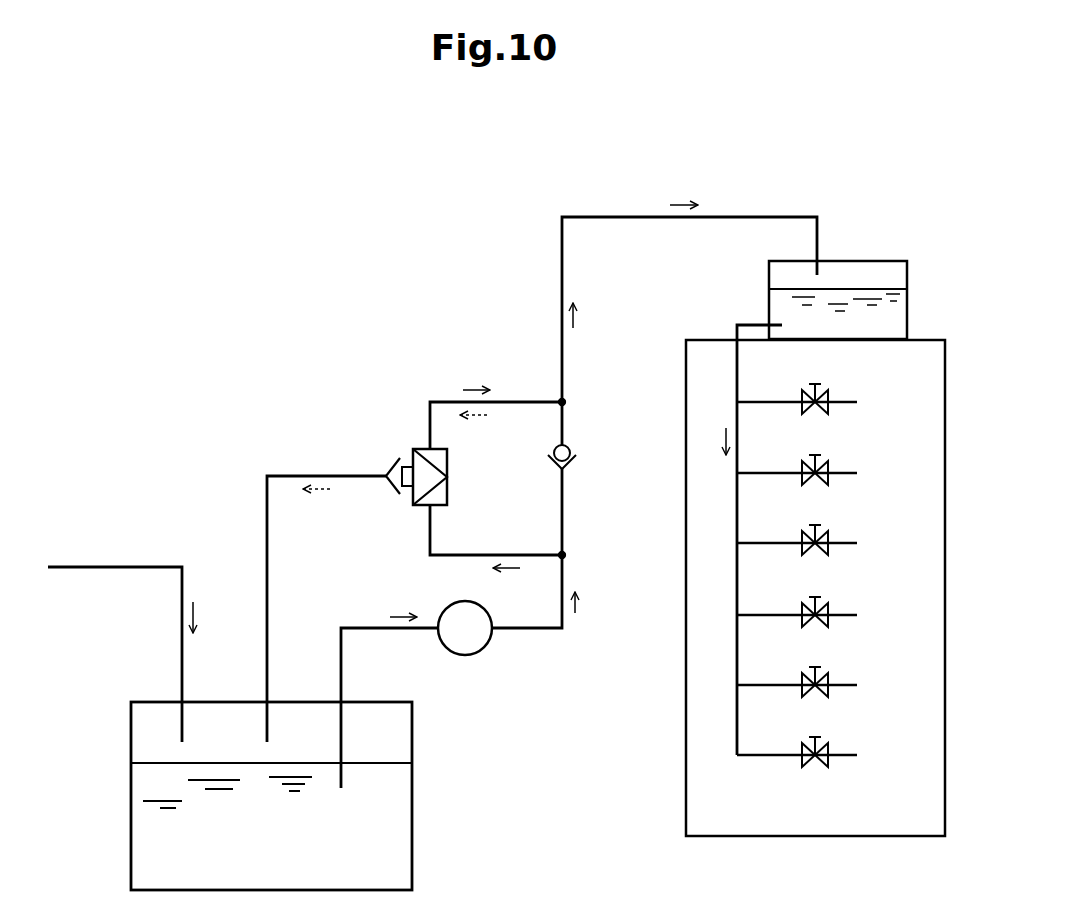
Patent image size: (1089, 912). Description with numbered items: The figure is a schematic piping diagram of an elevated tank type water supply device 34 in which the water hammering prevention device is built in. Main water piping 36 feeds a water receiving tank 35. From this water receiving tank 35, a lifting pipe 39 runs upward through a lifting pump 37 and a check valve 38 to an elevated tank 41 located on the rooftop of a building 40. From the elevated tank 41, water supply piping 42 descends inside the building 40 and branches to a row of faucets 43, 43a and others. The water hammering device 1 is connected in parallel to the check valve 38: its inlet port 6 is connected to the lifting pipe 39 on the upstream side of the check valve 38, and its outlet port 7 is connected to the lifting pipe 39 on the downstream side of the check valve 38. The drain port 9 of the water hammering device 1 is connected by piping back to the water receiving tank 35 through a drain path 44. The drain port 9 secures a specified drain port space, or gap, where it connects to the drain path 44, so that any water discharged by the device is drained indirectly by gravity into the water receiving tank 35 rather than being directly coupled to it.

The water hammering device 1 is at (413, 456).
The inlet port 6 is at (430, 505).
The outlet port 7 is at (430, 447).
The drain port 9 is at (397, 487).
The elevated tank type water supply device 34 is at (478, 322).
The water receiving tank 35 is at (360, 840).
The main water piping 36 is at (130, 567).
The lifting pump 37 is at (476, 641).
The check valve 38 is at (574, 467).
The lifting pipe 39 is at (563, 355).
The building 40 is at (903, 447).
The elevated tank 41 is at (890, 317).
The water supply piping 42 is at (736, 503).
The faucet 43 is at (830, 412).
The faucet 43a is at (830, 481).
The drain path 44 is at (267, 528).